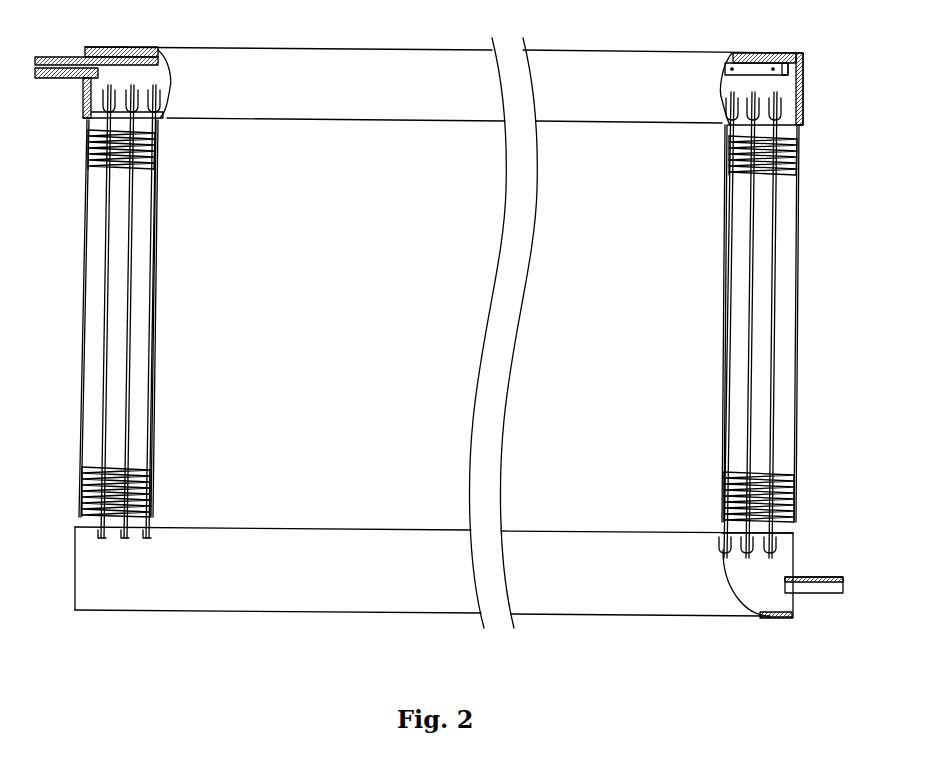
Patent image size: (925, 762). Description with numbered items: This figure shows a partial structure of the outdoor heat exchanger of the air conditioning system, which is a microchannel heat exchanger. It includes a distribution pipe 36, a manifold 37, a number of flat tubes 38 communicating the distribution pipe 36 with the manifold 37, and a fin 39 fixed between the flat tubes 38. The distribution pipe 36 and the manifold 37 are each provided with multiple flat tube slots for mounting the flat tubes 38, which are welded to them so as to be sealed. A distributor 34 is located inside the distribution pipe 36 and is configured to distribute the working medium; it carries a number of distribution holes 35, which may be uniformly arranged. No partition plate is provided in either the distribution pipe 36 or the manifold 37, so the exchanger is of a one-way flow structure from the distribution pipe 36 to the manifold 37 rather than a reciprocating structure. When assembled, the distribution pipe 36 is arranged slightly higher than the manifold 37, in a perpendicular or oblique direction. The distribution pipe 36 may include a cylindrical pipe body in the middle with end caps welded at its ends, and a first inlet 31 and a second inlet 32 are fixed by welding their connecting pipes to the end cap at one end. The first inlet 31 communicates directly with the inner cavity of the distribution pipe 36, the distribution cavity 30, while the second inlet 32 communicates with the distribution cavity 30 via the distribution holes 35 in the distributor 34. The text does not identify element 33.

The distribution cavity 30 is at (97, 88).
The first inlet 31 is at (47, 77).
The second inlet 32 is at (45, 62).
The mounting bar 33 is at (814, 569).
The distributor 34 is at (115, 61).
The distribution holes 35 is at (128, 64).
The distribution pipe 36 is at (772, 65).
The manifold 37 is at (767, 613).
The flat tubes 38 is at (772, 182).
The fin 39 is at (728, 167).